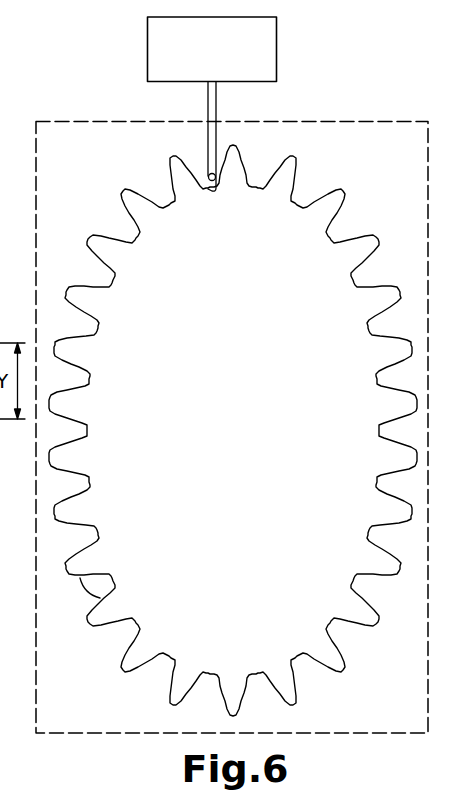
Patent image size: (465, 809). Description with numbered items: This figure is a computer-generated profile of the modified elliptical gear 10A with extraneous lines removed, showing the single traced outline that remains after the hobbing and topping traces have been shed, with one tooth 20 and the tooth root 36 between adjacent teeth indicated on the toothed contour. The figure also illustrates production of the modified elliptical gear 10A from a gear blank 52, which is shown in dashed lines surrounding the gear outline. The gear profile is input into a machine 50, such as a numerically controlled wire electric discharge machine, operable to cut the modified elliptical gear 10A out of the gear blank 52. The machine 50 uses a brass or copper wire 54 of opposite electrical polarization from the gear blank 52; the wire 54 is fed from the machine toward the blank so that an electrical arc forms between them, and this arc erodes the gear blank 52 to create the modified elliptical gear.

The modified elliptical gear 10A is at (367, 212).
The gear blank 52 is at (370, 120).
The machine 50 is at (147, 47).
The wire 54 is at (201, 198).
The tooth root 36 is at (118, 577).
The gear tooth 20 is at (73, 597).